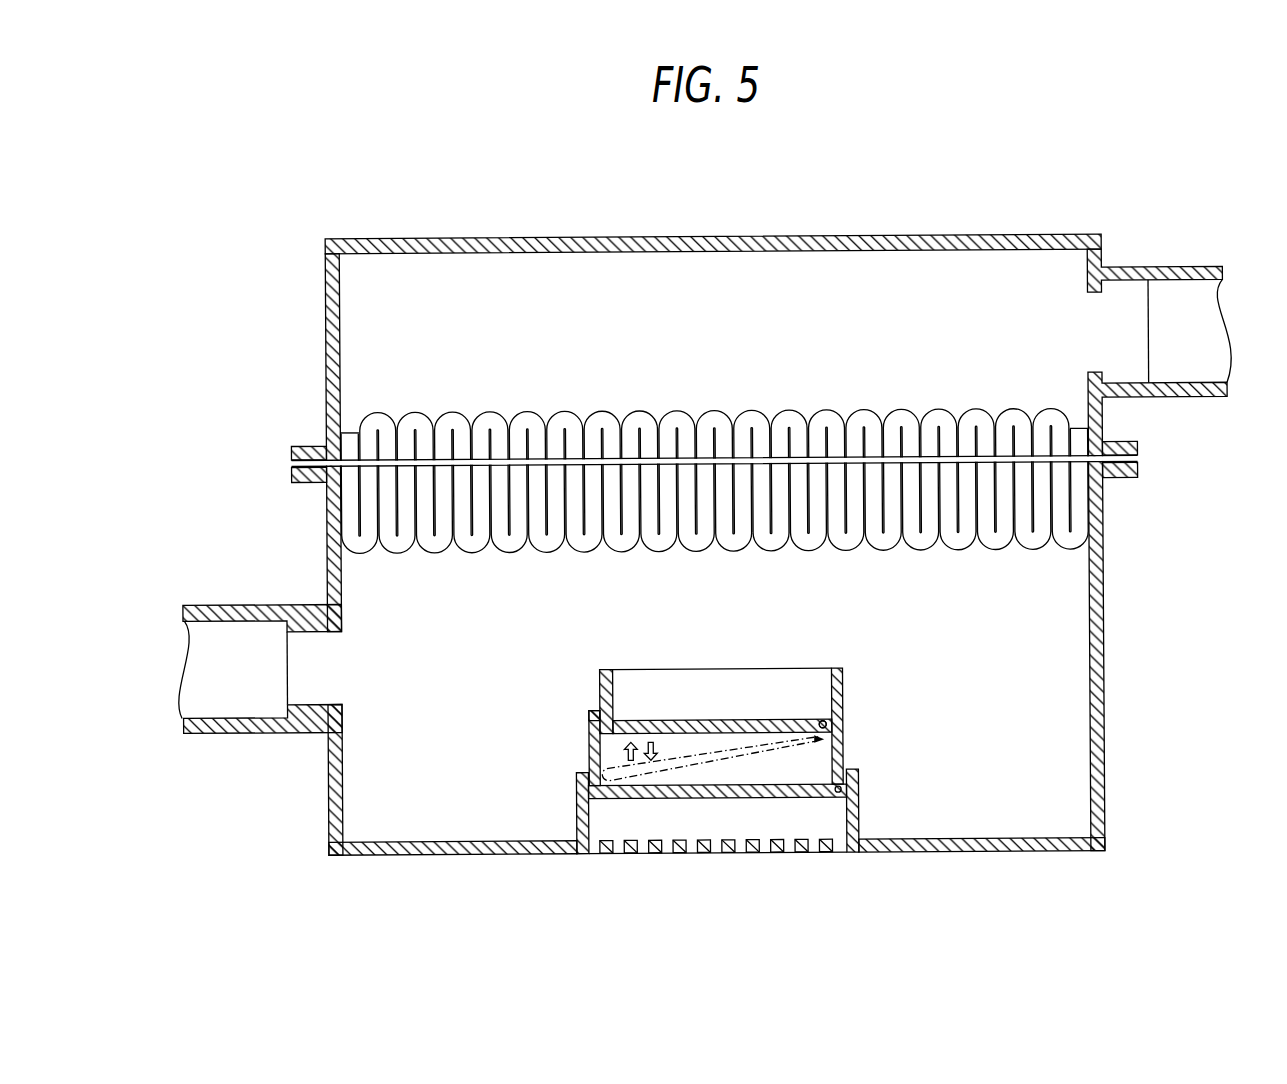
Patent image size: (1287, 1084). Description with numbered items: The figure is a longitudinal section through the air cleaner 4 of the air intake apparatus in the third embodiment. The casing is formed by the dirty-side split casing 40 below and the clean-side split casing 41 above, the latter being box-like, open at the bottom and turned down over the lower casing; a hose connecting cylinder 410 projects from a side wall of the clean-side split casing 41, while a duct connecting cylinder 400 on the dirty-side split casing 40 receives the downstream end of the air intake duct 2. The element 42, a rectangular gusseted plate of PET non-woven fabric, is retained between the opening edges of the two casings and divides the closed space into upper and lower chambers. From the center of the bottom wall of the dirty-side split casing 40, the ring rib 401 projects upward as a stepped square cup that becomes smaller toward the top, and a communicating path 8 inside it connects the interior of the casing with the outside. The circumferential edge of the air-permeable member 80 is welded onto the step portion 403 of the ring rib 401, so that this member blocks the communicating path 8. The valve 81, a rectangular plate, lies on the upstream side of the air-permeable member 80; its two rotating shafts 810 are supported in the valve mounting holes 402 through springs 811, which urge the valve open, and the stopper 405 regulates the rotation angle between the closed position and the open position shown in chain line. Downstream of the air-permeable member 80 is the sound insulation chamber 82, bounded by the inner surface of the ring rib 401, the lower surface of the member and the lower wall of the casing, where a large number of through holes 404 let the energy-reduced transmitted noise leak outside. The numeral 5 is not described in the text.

The air cleaner 4 is at (1112, 194).
The exhaust pipe 5 is at (1178, 268).
The clean-side split casing 41 is at (327, 343).
The element 42 is at (498, 436).
The hose connecting cylinder 410 is at (1128, 295).
The air intake duct 2 is at (228, 603).
The duct connecting cylinder 400 is at (322, 703).
The dirty-side split casing 40 is at (327, 796).
The communicating path 8 is at (659, 681).
The valve 81 is at (722, 720).
The valve mounting holes 402 is at (816, 708).
The stopper 405 is at (596, 714).
The ring rib 401 is at (595, 760).
The springs 811 is at (827, 721).
The rotating shafts 810 is at (833, 732).
The step portion 403 is at (847, 790).
The sound insulation chamber 82 is at (643, 828).
The air-permeable member 80 is at (763, 799).
The through holes 404 is at (692, 858).